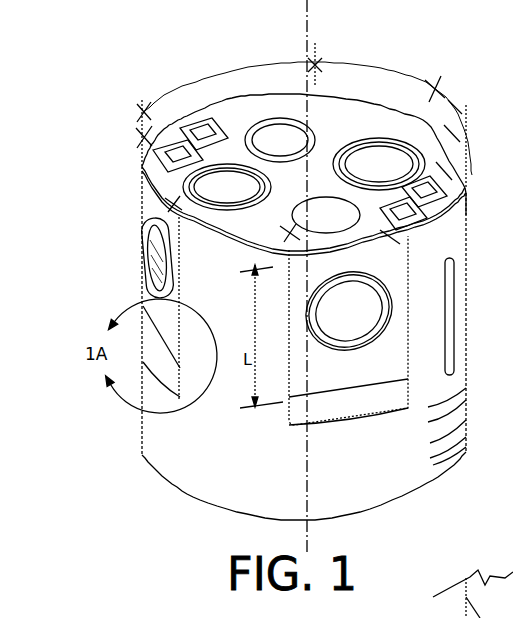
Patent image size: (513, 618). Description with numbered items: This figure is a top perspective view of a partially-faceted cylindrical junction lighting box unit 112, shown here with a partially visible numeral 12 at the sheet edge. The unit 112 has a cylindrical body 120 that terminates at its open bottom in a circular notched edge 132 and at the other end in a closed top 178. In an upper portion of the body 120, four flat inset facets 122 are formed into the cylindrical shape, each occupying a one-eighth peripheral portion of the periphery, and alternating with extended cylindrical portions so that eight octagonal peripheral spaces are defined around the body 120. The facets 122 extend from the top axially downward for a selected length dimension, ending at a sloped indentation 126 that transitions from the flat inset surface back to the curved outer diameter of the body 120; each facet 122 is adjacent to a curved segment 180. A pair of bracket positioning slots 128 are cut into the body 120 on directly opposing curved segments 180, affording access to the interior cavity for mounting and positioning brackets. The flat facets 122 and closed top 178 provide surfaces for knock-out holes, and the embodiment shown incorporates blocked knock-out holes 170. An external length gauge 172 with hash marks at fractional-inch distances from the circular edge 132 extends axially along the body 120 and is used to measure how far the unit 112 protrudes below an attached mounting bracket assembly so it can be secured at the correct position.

The cylindrical junction lighting box unit 112 is at (369, 80).
The closed top 178 is at (323, 103).
The cylindrical body 120 is at (183, 440).
The circular notched edge 132 is at (160, 478).
The blocked knock-out holes 170 is at (374, 157).
The flat inset facets 122 is at (295, 313).
The bracket positioning slots 128 is at (459, 300).
The curved segment 180 is at (457, 304).
The sloped indentation 126 is at (157, 347).
The external length gauge 172 is at (452, 449).
The housing 12 is at (505, 395).